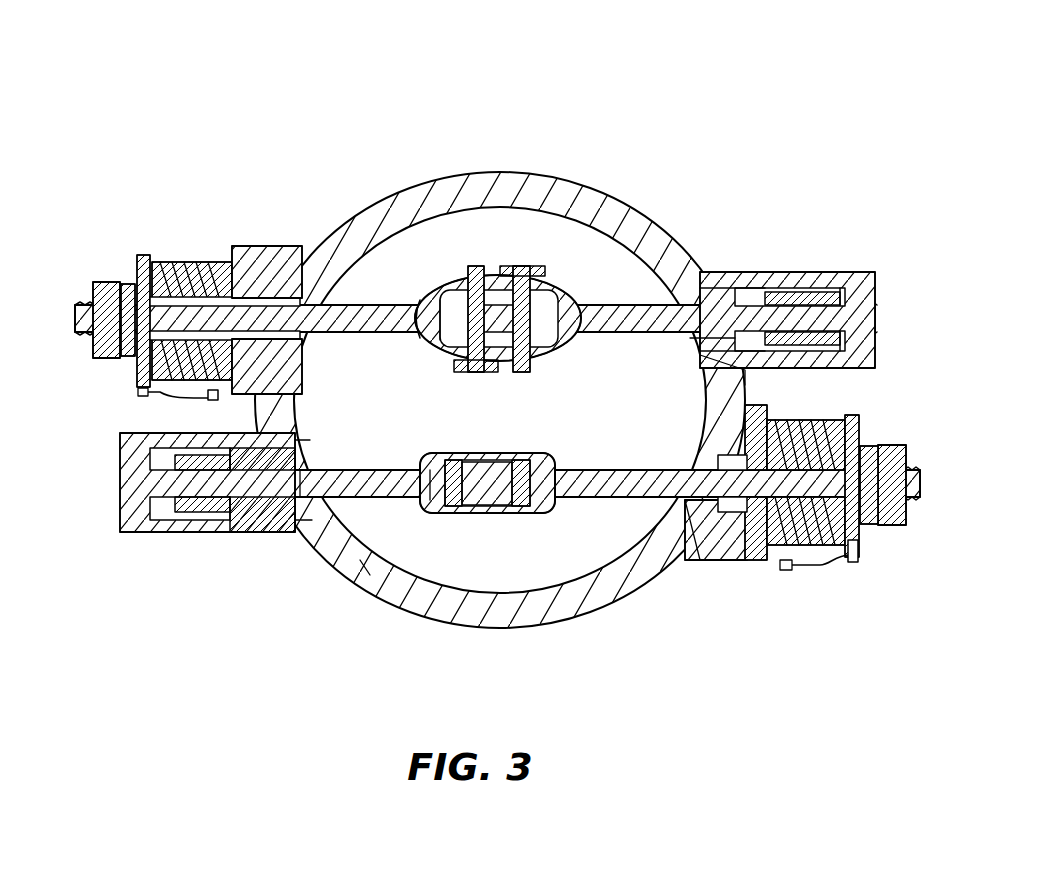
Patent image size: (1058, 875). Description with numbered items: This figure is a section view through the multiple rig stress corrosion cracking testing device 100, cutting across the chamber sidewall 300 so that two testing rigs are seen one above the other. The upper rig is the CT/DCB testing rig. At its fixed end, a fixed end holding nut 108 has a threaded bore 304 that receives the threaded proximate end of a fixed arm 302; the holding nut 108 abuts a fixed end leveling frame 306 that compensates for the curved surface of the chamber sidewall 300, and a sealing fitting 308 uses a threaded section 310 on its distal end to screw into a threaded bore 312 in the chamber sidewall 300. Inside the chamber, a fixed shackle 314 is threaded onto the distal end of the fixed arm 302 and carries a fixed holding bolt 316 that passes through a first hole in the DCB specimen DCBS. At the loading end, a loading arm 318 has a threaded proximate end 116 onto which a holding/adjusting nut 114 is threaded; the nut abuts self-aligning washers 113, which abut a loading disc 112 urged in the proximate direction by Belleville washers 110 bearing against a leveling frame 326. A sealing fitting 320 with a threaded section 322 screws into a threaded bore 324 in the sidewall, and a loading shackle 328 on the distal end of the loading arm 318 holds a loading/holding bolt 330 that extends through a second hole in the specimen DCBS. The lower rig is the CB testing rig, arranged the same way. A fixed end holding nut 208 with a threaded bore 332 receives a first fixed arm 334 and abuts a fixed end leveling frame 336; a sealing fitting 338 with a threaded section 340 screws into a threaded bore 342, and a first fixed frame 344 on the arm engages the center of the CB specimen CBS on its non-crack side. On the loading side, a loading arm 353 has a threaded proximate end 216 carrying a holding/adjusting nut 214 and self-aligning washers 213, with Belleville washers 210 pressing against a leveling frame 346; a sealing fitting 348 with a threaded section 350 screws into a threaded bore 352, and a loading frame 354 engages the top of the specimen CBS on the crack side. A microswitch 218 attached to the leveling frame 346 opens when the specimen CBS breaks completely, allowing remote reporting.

The multiple rig stress corrosion cracking testing device 100 is at (818, 78).
The fixed end holding nut 108 is at (870, 374).
The Belleville washers 110 is at (176, 262).
The loading disc 112 is at (142, 256).
The self-aligning washers 113 is at (126, 284).
The holding/adjusting nut 114 is at (128, 392).
The threaded proximate end 116 is at (110, 355).
The fixed end holding nut 208 is at (142, 532).
The Belleville washers 210 is at (835, 430).
The self-aligning washers 213 is at (900, 528).
The holding/adjusting nut 214 is at (875, 455).
The threaded proximate end 216 is at (905, 525).
The microswitch 218 is at (810, 575).
The chamber sidewall 300 is at (455, 172).
The fixed arm 302 is at (705, 275).
The threaded bore 304 is at (872, 300).
The fixed end leveling frame 306 is at (755, 265).
The sealing fitting 308 is at (800, 292).
The threaded section 310 is at (740, 372).
The threaded bore 312 is at (695, 348).
The fixed shackle 314 is at (540, 300).
The fixed holding bolt 316 is at (560, 240).
The loading arm 318 is at (95, 300).
The sealing fitting 320 is at (200, 262).
The threaded section 322 is at (252, 265).
The threaded bore 324 is at (290, 342).
The leveling frame 326 is at (300, 246).
The loading shackle 328 is at (432, 285).
The loading/holding bolt 330 is at (468, 372).
The threaded bore 332 is at (122, 485).
The first fixed arm 334 is at (385, 572).
The fixed end leveling frame 336 is at (278, 533).
The sealing fitting 338 is at (178, 512).
The threaded section 340 is at (330, 458).
The threaded bore 342 is at (305, 533).
The first fixed frame 344 is at (432, 512).
The leveling frame 346 is at (755, 562).
The sealing fitting 348 is at (858, 562).
The threaded section 350 is at (722, 560).
The threaded bore 352 is at (680, 500).
The loading arm 353 is at (598, 468).
The loading frame 354 is at (508, 458).
The DCB specimen DCBS is at (516, 272).
The CB specimen CBS is at (510, 512).